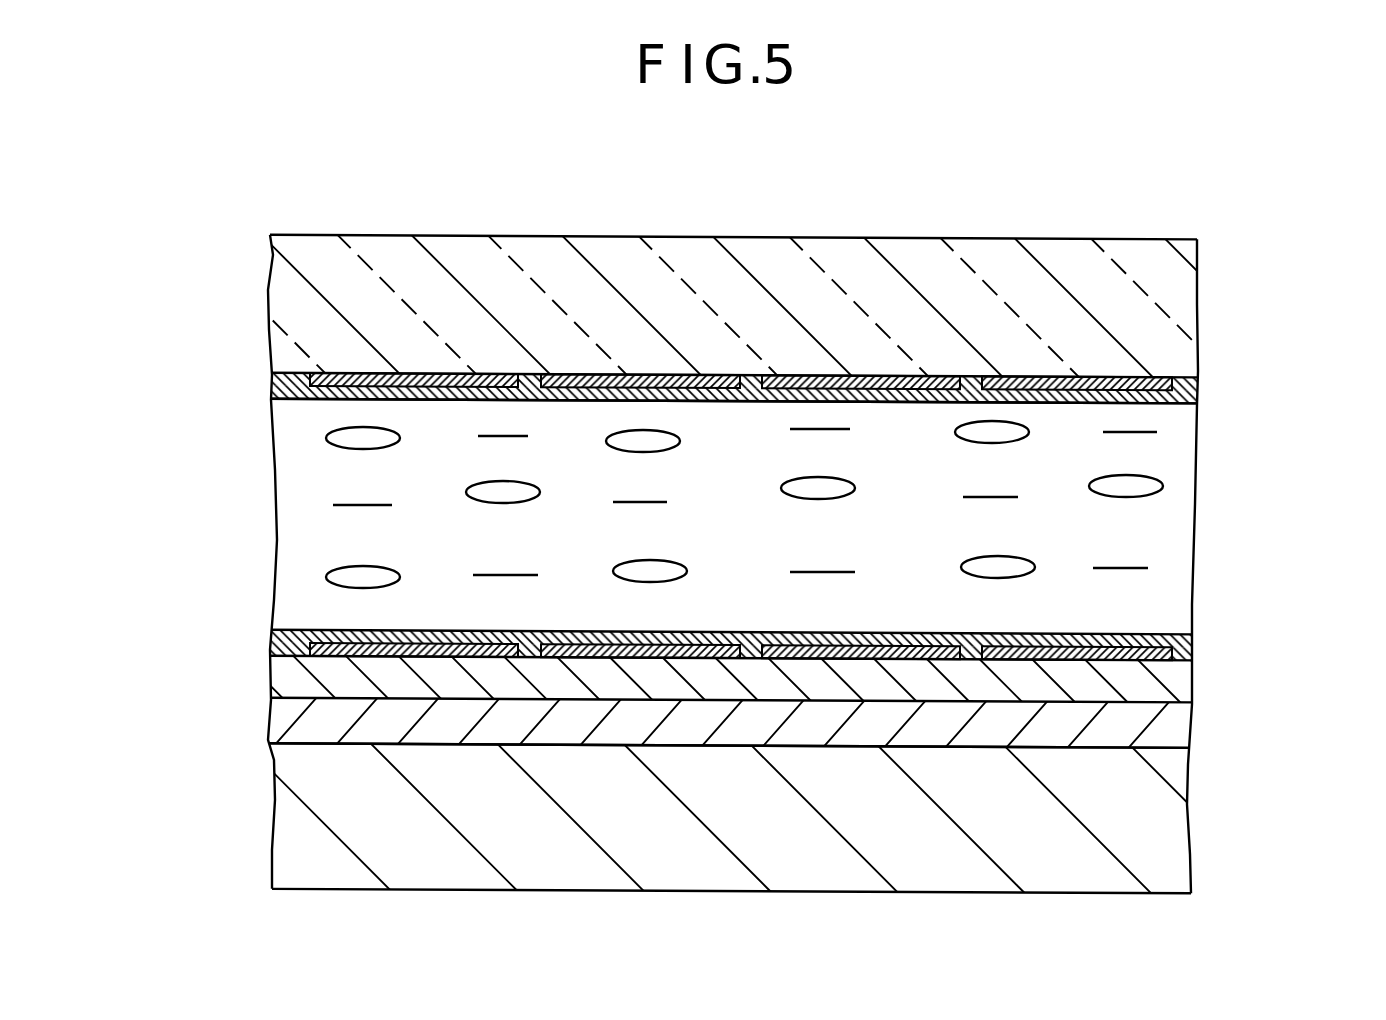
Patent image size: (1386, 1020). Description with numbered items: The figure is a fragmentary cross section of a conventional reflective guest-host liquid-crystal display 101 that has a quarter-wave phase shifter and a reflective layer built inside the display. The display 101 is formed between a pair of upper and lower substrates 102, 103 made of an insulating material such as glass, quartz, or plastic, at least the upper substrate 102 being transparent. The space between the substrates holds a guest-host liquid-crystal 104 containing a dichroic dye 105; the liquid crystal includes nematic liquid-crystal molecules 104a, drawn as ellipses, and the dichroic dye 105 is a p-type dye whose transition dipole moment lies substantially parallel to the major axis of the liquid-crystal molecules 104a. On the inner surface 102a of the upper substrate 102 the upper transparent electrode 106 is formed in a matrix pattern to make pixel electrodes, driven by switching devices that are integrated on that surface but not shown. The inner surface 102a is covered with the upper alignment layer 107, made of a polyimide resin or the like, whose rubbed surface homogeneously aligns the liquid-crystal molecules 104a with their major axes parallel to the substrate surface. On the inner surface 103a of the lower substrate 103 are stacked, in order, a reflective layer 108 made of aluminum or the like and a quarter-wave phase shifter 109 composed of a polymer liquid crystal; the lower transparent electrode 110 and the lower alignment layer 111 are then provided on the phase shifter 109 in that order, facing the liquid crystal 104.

The reflective guest-host liquid-crystal display 101 is at (1100, 228).
The upper substrate 102 is at (293, 330).
The inner surface of the upper substrate 102a is at (272, 386).
The lower substrate 103 is at (310, 838).
The inner surface of the lower substrate 103a is at (295, 745).
The guest-host liquid-crystal 104 is at (308, 525).
The nematic liquid-crystal molecules 104a is at (1163, 484).
The dichroic dye 105 is at (1122, 566).
The upper transparent electrode 106 is at (1172, 379).
The upper alignment layer 107 is at (1168, 396).
The reflective layer 108 is at (1173, 727).
The λ/4 phase shifter 109 is at (1163, 685).
The lower transparent electrode 110 is at (1157, 634).
The lower alignment layer 111 is at (1163, 650).